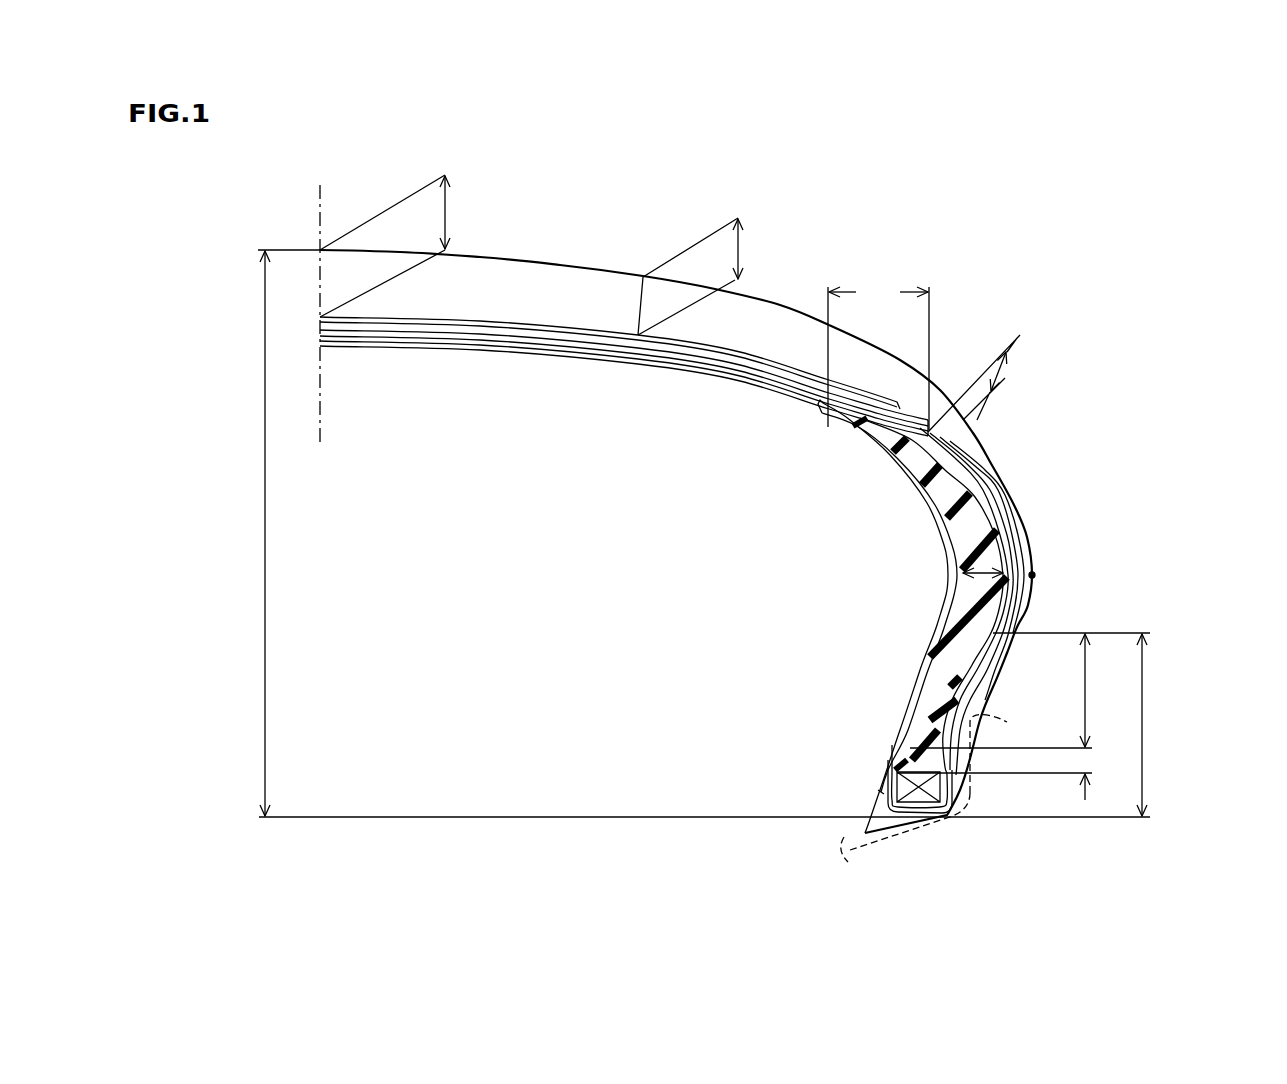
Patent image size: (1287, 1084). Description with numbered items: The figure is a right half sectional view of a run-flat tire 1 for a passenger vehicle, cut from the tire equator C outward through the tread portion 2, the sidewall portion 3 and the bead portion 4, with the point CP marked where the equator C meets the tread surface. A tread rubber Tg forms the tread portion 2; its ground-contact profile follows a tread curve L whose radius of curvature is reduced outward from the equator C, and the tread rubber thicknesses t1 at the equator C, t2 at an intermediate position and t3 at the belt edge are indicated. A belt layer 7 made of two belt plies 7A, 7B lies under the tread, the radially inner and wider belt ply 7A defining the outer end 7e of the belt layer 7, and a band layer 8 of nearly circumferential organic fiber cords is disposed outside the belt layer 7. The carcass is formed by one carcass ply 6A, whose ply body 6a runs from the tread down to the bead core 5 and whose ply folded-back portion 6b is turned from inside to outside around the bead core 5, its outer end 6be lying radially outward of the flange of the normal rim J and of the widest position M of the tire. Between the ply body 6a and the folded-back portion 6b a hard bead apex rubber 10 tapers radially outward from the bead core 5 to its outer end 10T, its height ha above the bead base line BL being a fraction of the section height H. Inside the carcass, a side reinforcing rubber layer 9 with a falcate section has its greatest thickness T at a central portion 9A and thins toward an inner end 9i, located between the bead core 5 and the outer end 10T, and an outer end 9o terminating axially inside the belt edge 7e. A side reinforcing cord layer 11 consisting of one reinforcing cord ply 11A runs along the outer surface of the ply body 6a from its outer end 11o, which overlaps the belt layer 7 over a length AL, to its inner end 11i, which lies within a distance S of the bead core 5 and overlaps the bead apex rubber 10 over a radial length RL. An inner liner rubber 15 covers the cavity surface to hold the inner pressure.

The run-flat tire 1 is at (994, 286).
The tread portion 2 is at (560, 247).
The sidewall portion 3 is at (1044, 545).
The bead portion 4 is at (964, 803).
The bead core 5 is at (905, 788).
The carcass ply 6A is at (1158, 437).
The ply body 6a is at (957, 458).
The ply folded-back portion 6b is at (1002, 517).
The outer end of the ply folded-back portion 6be is at (987, 497).
The belt layer 7 is at (479, 483).
The belt ply 7A is at (402, 337).
The belt ply 7B is at (455, 330).
The outer end of the belt layer 7e is at (930, 432).
The band layer 8 is at (552, 318).
The side reinforcing rubber layer 9 is at (963, 603).
The central portion 9A is at (969, 588).
The outer end of the side reinforcing rubber layer 9o is at (821, 416).
The inner end of the side reinforcing rubber layer 9i is at (895, 740).
The bead apex rubber 10 is at (930, 723).
The outer end of the bead apex rubber 10T is at (1000, 628).
The side reinforcing cord layer 11 is at (925, 467).
The reinforcing cord ply 11A is at (830, 616).
The outer end of the side reinforcing cord layer 11o is at (820, 403).
The inner end of the side reinforcing cord layer 11i is at (897, 760).
The inner liner rubber 15 is at (680, 366).
The tire equator C is at (320, 302).
The tire equator point CP is at (318, 249).
The tread rubber Tg is at (480, 280).
The tread curve L is at (780, 305).
The height of cross section of the tire H is at (289, 533).
The bead base line BL is at (703, 817).
The length of the superposed portion AL is at (878, 355).
The thickness of the tread rubber at the tire equator t1 is at (395, 246).
The thickness of the tread rubber at an intermediate position t2 is at (698, 276).
The thickness of the tread rubber at the outer end of the belt layer t3 is at (978, 383).
The greatest thickness T is at (975, 560).
The widest position of the tire M is at (1036, 575).
The length of the superposed portion RL is at (1014, 691).
The height of the outer end of the bead apex rubber ha is at (1083, 724).
The distance from the outer surface of the bead core S is at (1000, 773).
The normal rim J is at (905, 833).